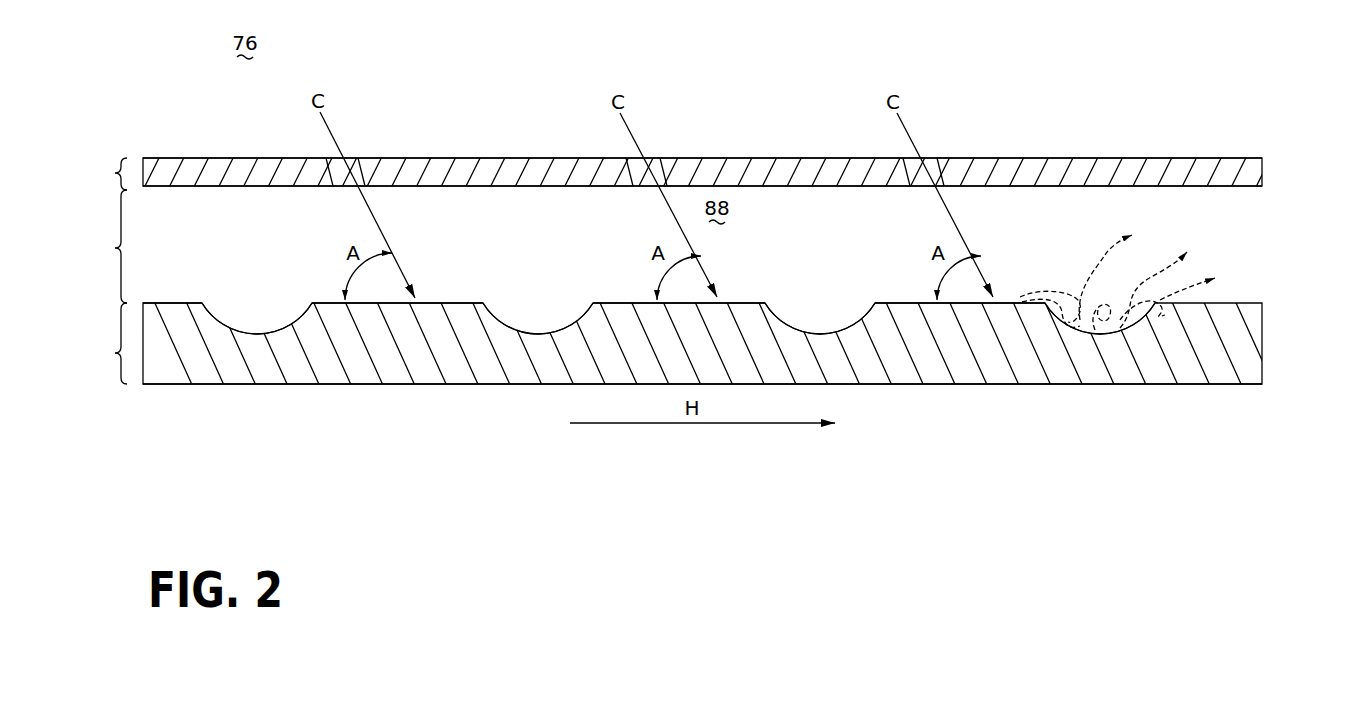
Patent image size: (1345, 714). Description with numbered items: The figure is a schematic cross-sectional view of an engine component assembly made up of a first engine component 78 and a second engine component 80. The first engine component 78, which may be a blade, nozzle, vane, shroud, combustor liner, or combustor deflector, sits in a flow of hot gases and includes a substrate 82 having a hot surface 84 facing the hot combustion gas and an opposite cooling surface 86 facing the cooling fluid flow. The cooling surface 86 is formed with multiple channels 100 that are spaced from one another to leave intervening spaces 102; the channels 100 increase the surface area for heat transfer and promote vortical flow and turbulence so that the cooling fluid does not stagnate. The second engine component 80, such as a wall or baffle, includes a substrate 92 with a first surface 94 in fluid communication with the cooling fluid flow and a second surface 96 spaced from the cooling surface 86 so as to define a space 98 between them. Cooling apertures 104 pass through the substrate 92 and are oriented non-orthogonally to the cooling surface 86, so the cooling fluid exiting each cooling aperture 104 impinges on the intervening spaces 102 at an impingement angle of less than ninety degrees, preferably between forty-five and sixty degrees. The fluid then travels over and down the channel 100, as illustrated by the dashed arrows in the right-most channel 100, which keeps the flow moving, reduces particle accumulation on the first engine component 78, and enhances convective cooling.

The first engine component 78 is at (1268, 315).
The second engine component 80 is at (1268, 175).
The substrate 82 is at (104, 343).
The hot surface 84 is at (185, 384).
The cooling surface 86 is at (165, 303).
The substrate 92 is at (104, 174).
The first surface 94 is at (208, 158).
The second surface 96 is at (205, 186).
The space 98 is at (104, 246).
The channels 100 is at (224, 327).
The intervening space 102 is at (445, 303).
The cooling aperture 104 is at (372, 170).